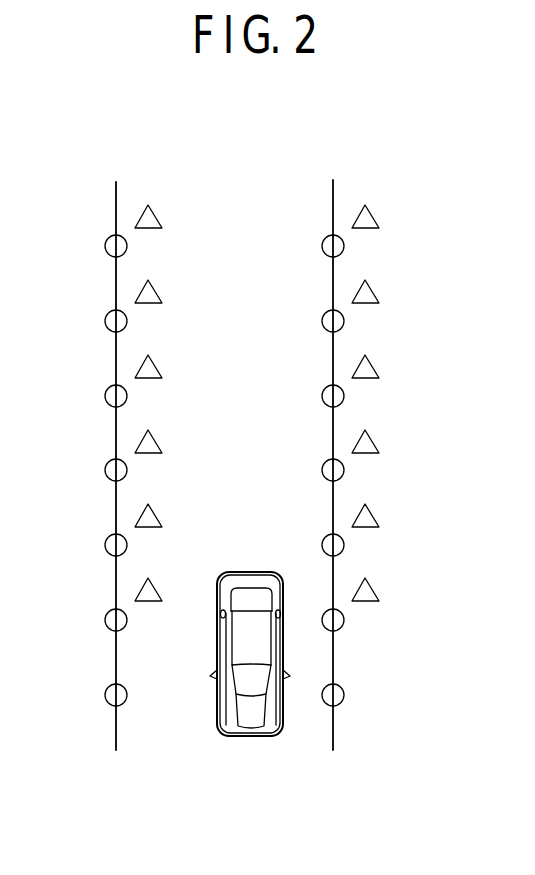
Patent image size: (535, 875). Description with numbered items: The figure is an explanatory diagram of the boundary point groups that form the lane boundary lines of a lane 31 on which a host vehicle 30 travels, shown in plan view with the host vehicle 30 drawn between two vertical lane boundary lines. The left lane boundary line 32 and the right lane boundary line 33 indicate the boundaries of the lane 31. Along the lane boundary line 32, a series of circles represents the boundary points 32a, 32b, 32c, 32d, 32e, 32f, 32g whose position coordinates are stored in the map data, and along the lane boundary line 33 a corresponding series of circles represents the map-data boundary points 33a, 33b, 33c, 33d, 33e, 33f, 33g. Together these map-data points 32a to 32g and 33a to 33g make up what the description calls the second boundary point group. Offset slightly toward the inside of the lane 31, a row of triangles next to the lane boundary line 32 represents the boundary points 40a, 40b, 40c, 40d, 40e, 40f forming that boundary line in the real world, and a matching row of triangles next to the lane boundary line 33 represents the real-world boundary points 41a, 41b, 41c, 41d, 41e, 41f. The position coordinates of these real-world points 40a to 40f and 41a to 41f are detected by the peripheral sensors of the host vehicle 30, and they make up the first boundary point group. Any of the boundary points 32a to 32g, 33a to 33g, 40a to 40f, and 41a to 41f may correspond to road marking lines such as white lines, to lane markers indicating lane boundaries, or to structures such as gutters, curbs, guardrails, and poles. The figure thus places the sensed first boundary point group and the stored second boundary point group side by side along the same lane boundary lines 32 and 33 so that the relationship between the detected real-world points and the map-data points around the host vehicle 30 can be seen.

The host vehicle 30 is at (249, 738).
The lane 31 is at (232, 200).
The lane boundary line 32 is at (116, 187).
The lane boundary line 33 is at (333, 187).
The boundary point 32a is at (105, 246).
The boundary point 32b is at (105, 321).
The boundary point 32c is at (105, 396).
The boundary point 32d is at (105, 470).
The boundary point 32e is at (105, 545).
The boundary point 32f is at (105, 620).
The boundary point 32g is at (105, 695).
The boundary point 33a is at (322, 246).
The boundary point 33b is at (322, 321).
The boundary point 33c is at (322, 396).
The boundary point 33d is at (322, 470).
The boundary point 33e is at (322, 545).
The boundary point 33f is at (344, 622).
The boundary point 33g is at (344, 697).
The boundary point 40a is at (156, 214).
The boundary point 40b is at (156, 289).
The boundary point 40c is at (156, 364).
The boundary point 40d is at (156, 439).
The boundary point 40e is at (156, 513).
The boundary point 40f is at (154, 586).
The boundary point 41a is at (373, 214).
The boundary point 41b is at (373, 289).
The boundary point 41c is at (373, 364).
The boundary point 41d is at (373, 439).
The boundary point 41e is at (373, 513).
The boundary point 41f is at (373, 587).